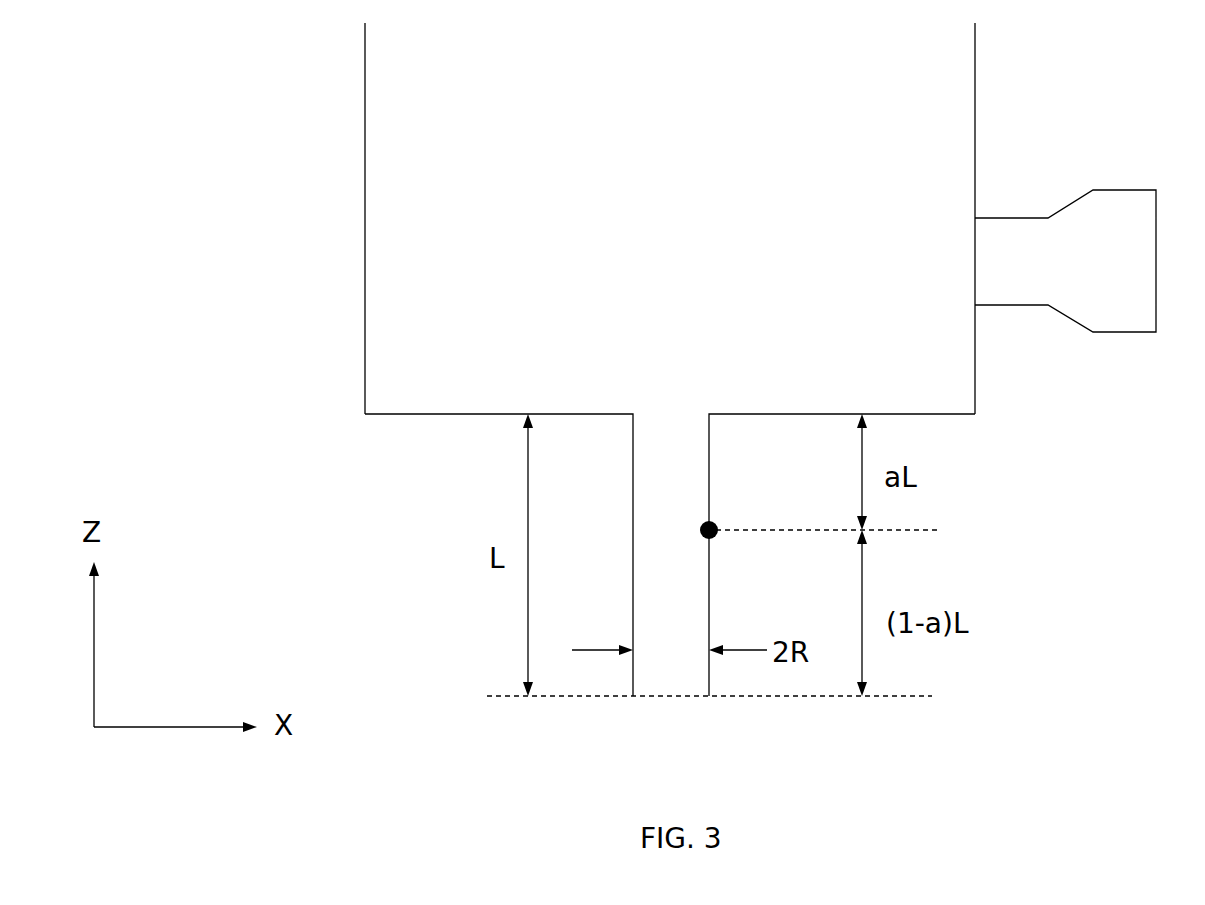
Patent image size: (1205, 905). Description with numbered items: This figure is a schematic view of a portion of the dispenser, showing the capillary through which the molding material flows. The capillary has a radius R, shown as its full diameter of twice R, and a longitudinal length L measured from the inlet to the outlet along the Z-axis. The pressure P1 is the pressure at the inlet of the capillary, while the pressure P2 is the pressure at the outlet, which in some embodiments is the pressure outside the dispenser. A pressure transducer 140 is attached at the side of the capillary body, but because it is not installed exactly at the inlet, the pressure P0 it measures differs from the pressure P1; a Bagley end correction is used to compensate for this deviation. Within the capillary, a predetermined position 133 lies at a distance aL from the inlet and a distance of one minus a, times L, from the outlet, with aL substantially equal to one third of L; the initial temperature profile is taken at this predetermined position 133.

The predetermined position 133 is at (714, 512).
The pressure transducer 140 is at (1110, 277).
The pressure measured by the pressure transducer P0 is at (948, 261).
The pressure at the inlet P1 is at (670, 521).
The pressure at the outlet P2 is at (709, 733).